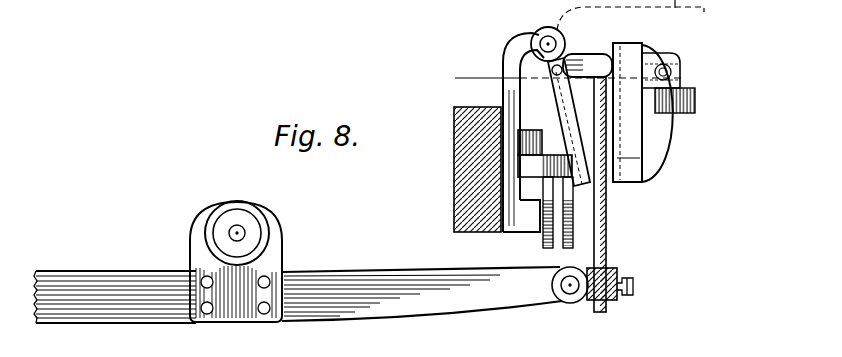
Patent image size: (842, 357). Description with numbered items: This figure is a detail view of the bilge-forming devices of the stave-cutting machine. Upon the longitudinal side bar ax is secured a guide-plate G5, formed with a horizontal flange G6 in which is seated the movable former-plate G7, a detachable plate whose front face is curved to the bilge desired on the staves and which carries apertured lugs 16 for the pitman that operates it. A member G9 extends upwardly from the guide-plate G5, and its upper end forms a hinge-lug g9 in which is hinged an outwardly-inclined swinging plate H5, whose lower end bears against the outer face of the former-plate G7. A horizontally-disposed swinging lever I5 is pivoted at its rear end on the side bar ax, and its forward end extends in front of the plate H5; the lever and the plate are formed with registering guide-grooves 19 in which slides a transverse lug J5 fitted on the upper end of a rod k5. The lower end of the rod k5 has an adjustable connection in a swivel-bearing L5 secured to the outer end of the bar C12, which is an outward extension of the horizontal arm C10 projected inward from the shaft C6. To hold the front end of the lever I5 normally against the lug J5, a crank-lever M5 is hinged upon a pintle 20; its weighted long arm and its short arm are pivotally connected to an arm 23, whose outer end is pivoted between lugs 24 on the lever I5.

The horizontal arm C10 is at (115, 297).
The outward extension C12 is at (435, 294).
The shaft C6 is at (246, 233).
The longitudinal side bar ax is at (454, 158).
The upwardly extending member G9 is at (509, 58).
The guide-plate G5 is at (518, 214).
The pintle 20 is at (548, 44).
The hinge-lug g9 is at (559, 62).
The former-plate G7 is at (574, 184).
The transverse lug J5 is at (587, 65).
The arm 23 is at (587, 78).
The swinging plate H5 is at (568, 73).
The rod k5 is at (606, 231).
The swivel-bearing L5 is at (617, 271).
The swinging lever I5 is at (668, 117).
The lug 24 is at (681, 78).
The guide-groove 19 is at (584, 54).
The crank-lever M5 is at (630, 15).
The horizontal flange G6 is at (535, 131).
The apertured lug 16 is at (559, 240).